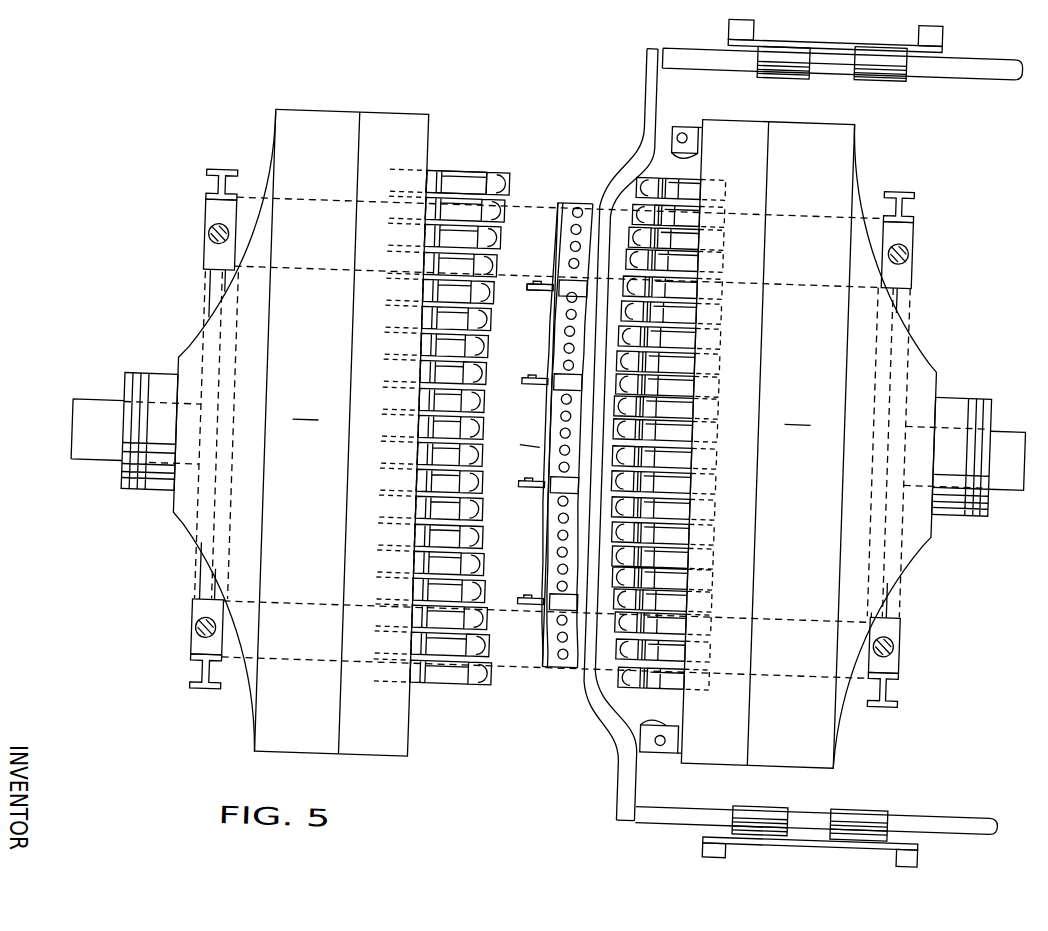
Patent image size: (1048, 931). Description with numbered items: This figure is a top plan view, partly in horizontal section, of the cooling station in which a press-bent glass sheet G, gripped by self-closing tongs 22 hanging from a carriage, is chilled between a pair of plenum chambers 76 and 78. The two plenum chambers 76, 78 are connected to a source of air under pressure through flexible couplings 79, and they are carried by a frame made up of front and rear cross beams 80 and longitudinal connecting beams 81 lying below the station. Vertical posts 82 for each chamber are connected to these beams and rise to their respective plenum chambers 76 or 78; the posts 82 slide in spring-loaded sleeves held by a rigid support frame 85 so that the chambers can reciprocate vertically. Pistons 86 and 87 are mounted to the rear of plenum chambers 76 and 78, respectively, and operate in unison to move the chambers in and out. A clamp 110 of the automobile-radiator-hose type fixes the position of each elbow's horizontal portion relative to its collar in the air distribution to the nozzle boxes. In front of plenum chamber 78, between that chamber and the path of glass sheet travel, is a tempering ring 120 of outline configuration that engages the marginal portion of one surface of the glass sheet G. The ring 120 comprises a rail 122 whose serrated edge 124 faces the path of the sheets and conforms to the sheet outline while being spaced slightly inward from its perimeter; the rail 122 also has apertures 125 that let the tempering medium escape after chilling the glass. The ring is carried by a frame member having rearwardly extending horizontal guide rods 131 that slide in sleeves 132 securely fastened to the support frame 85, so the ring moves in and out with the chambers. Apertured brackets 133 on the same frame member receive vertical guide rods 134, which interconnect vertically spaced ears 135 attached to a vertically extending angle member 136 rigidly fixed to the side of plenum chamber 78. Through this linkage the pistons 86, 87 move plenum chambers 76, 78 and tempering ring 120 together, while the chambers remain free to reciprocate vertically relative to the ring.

The tongs 22 is at (533, 382).
The plenum chamber 76 is at (192, 355).
The plenum chamber 78 is at (927, 352).
The flexible couplings 79 is at (134, 507).
The cross beams 80 is at (523, 255).
The longitudinal connecting beams 81 is at (205, 600).
The vertical posts 82 is at (201, 247).
The rigid support frame 85 is at (822, 31).
The piston 86 is at (113, 415).
The piston 87 is at (1004, 417).
The clamp 110 is at (426, 175).
The tempering ring 120 is at (556, 436).
The rail 122 is at (551, 670).
The serrated edge 124 is at (560, 245).
The apertures 125 is at (571, 660).
The horizontal guide rods 131 is at (955, 67).
The sleeves 132 is at (769, 71).
The apertured brackets 133 is at (665, 123).
The vertical guide rods 134 is at (678, 134).
The ears 135 is at (640, 158).
The angle member 136 is at (690, 156).
The glass sheet G is at (520, 440).